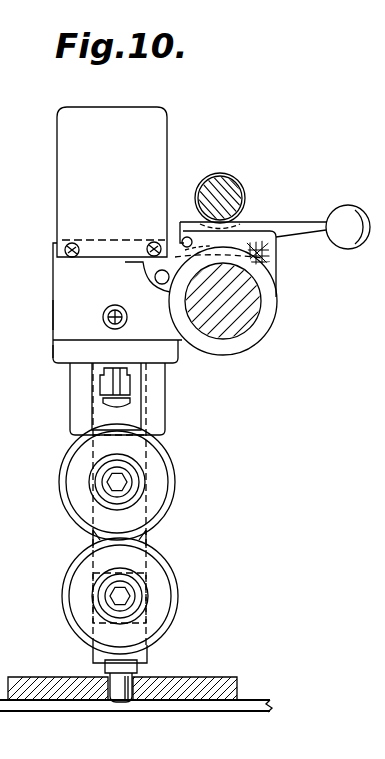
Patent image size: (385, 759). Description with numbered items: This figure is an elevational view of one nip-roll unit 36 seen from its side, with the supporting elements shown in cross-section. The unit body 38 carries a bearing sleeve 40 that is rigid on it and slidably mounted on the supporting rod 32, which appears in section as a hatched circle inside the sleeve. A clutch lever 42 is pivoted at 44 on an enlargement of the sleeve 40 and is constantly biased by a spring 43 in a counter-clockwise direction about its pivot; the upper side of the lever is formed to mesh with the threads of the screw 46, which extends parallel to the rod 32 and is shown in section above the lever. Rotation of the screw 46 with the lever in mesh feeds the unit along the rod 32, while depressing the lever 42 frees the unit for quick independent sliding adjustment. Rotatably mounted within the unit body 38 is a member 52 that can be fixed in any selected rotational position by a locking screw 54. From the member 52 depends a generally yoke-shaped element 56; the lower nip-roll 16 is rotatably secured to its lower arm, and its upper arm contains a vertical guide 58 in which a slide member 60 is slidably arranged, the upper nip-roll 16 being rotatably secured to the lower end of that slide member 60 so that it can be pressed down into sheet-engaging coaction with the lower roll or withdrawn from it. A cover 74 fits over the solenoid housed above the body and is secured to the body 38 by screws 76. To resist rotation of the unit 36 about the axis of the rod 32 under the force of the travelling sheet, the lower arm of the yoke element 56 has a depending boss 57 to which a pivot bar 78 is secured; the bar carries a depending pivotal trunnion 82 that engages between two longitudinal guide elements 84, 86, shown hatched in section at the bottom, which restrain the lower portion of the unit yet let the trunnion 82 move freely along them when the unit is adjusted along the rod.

The nip-roll 16 is at (173, 498).
The rod 32 is at (235, 322).
The nip-roll unit 36 is at (46, 301).
The unit body 38 is at (62, 322).
The bearing sleeve 40 is at (265, 320).
The clutch lever 42 is at (297, 222).
The spring 43 is at (262, 258).
The pivot 44 is at (187, 236).
The screw 46 is at (230, 182).
The member 52 is at (67, 350).
The locking screw 54 is at (114, 305).
The yoke-shaped element 56 is at (100, 537).
The boss 57 is at (148, 648).
The vertical guide 58 is at (140, 410).
The slide member 60 is at (100, 412).
The cover 74 is at (68, 166).
The screws 76 is at (68, 247).
The pivot bar 78 is at (133, 667).
The pivotal trunnion 82 is at (123, 692).
The guide element 84 is at (213, 680).
The guide element 86 is at (40, 683).